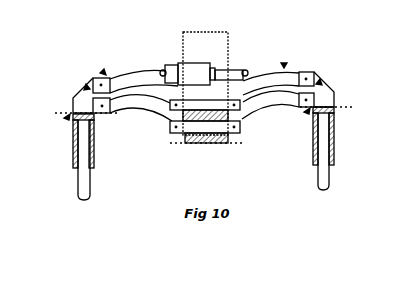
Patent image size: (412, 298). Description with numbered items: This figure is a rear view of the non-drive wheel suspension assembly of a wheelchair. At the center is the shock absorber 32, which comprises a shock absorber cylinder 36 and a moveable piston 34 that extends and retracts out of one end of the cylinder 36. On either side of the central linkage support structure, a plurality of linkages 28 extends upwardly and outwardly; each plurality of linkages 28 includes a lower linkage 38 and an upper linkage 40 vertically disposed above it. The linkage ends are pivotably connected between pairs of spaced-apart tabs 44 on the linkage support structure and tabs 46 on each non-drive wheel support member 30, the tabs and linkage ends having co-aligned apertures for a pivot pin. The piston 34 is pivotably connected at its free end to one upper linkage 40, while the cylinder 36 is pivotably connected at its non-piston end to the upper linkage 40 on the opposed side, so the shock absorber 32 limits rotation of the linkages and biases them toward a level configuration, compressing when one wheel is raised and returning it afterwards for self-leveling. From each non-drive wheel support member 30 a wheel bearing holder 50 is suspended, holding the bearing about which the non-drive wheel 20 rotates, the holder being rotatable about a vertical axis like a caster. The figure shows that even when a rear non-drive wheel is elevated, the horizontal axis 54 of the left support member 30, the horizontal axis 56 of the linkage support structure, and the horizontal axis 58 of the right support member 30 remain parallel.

The non-drive wheel 20 is at (82, 188).
The plurality of linkages 28 is at (103, 67).
The non-drive wheel support member 30 is at (65, 120).
The shock absorber 32 is at (196, 58).
The piston 34 is at (233, 75).
The shock absorber cylinder 36 is at (185, 76).
The lower linkage 38 is at (137, 104).
The upper linkage 40 is at (126, 73).
The tabs 44 is at (205, 136).
The tabs 46 is at (88, 87).
The wheel bearing holder 50 is at (94, 158).
The horizontal axis 54 is at (63, 110).
The horizontal axis 56 is at (172, 144).
The horizontal axis 58 is at (349, 103).